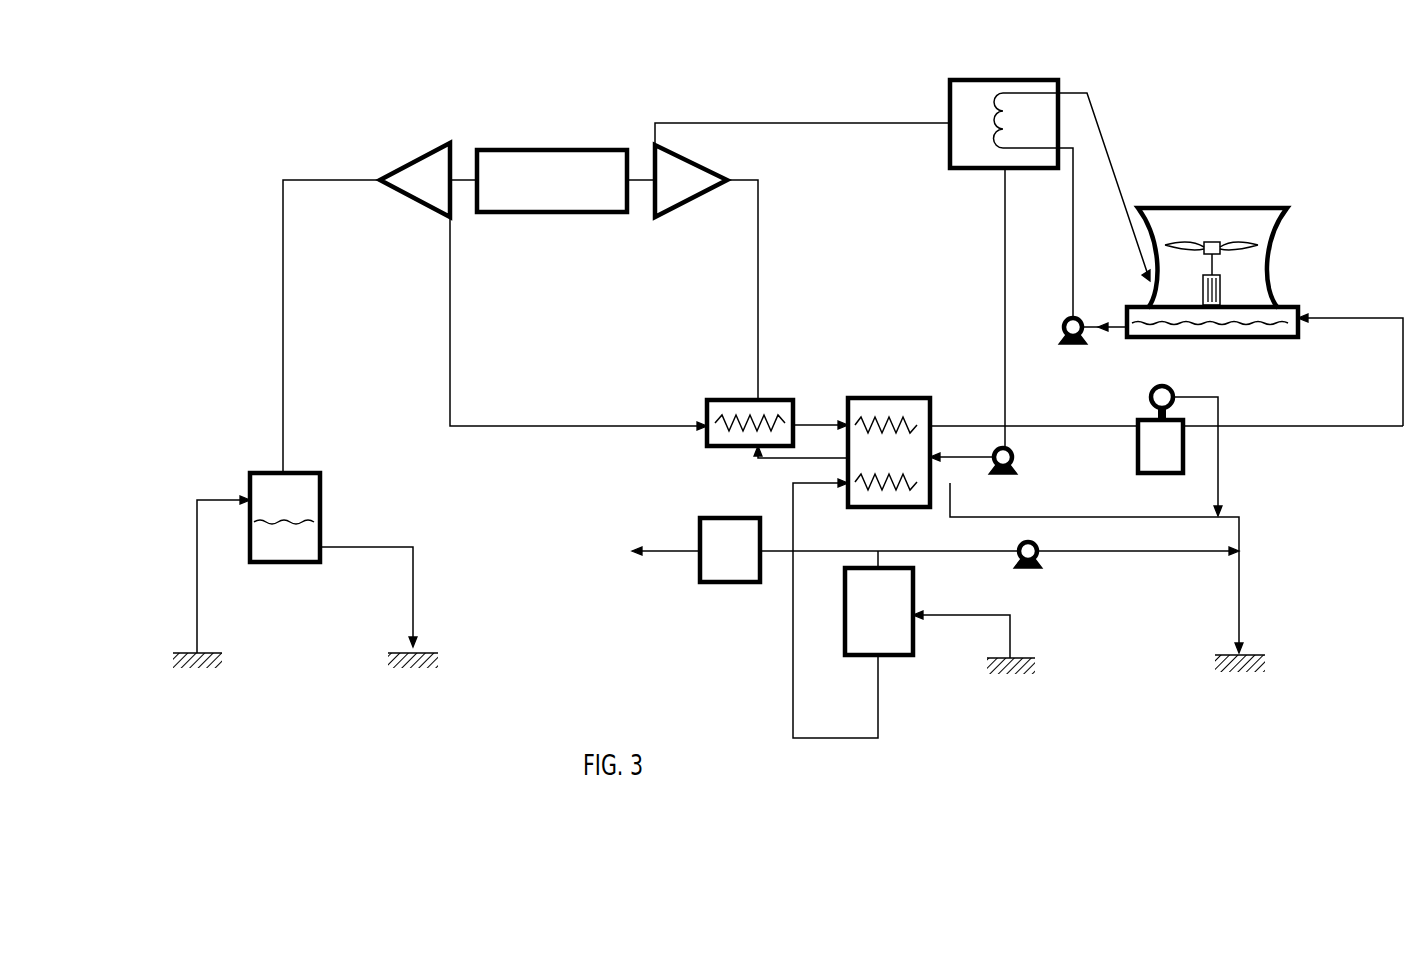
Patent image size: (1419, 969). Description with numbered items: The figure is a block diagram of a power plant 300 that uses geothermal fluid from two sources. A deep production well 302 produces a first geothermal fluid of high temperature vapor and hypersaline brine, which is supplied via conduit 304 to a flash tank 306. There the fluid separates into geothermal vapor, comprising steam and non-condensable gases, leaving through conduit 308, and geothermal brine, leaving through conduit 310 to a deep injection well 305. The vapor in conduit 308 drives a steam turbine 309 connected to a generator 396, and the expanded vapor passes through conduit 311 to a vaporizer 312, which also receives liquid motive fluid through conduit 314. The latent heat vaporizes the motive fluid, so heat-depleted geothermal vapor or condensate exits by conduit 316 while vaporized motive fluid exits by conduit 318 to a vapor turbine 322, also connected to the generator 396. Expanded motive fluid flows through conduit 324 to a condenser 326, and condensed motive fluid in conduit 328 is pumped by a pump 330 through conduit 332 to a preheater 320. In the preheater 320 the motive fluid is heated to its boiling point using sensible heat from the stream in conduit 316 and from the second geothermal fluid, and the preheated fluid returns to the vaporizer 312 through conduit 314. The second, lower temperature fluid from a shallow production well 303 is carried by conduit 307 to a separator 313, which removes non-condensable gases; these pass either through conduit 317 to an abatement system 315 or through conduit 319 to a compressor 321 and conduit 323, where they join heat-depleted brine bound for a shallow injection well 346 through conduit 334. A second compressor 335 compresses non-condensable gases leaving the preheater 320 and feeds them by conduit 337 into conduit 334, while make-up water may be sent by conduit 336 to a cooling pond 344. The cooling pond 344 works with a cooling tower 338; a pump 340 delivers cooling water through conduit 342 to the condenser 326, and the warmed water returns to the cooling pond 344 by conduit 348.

The power plant 300 is at (163, 133).
The deep production well 302 is at (205, 653).
The shallow production well 303 is at (1016, 664).
The conduit 304 is at (198, 525).
The deep injection well 305 is at (432, 653).
The flash tank 306 is at (315, 561).
The conduit 307 is at (1011, 617).
The conduit 308 is at (282, 453).
The steam turbine 309 is at (396, 165).
The conduit 310 is at (414, 549).
The conduit 311 is at (517, 426).
The vaporizer 312 is at (707, 446).
The separator 313 is at (913, 655).
The conduit 314 is at (790, 458).
The abatement system 315 is at (722, 518).
The conduit 316 is at (818, 406).
The conduit 317 is at (853, 548).
The conduit 318 is at (759, 287).
The conduit 319 is at (955, 548).
The preheater 320 is at (893, 507).
The compressor 321 is at (1017, 545).
The vapor turbine 322 is at (692, 200).
The conduit 323 is at (1103, 548).
The conduit 324 is at (893, 123).
The condenser 326 is at (1059, 81).
The conduit 328 is at (1006, 230).
The pump 330 is at (1014, 455).
The conduit 332 is at (968, 459).
The conduit 334 is at (1243, 536).
The compressor 335 is at (1150, 394).
The conduit 336 is at (1335, 320).
The conduit 337 is at (1220, 486).
The cooling tower 338 is at (1275, 248).
The pump 340 is at (1062, 325).
The conduit 342 is at (1075, 252).
The cooling pond 344 is at (1195, 338).
The shallow injection well 346 is at (1250, 657).
The conduit 348 is at (1112, 165).
The generator 396 is at (530, 150).